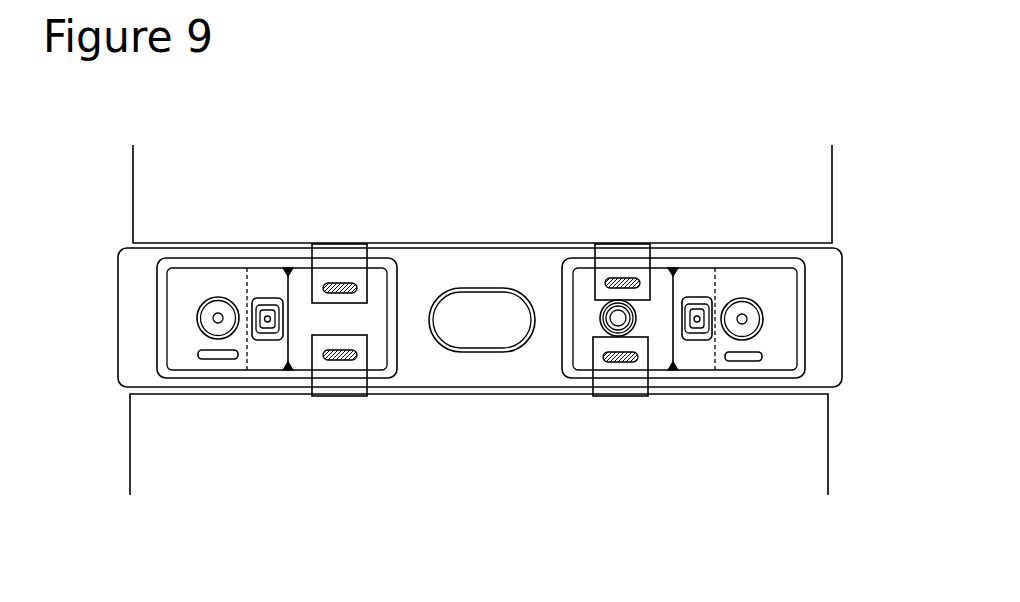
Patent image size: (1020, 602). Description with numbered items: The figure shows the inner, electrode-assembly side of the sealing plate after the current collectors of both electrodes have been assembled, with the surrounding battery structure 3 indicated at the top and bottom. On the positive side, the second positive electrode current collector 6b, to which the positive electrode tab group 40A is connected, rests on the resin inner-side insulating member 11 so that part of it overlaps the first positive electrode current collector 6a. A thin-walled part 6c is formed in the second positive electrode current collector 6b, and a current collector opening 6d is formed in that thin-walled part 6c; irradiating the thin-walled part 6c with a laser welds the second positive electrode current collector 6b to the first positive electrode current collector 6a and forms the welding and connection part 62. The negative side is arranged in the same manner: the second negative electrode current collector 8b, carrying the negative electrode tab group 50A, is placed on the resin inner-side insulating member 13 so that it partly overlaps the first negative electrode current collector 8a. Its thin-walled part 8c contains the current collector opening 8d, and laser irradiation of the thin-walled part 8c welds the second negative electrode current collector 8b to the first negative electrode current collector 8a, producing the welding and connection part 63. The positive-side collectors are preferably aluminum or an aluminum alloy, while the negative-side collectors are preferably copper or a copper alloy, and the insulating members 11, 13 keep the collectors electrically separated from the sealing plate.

The panel / wall 3 is at (803, 185).
The inner-side insulating member 11 is at (800, 357).
The inner-side insulating member 13 is at (158, 363).
The first negative electrode current collector 8a is at (203, 288).
The second negative electrode current collector 8b is at (368, 317).
The thin-walled part 8c is at (250, 345).
The current collector opening 8d is at (272, 297).
The welding and connection part 63 is at (267, 340).
The first positive electrode current collector 6a is at (767, 293).
The second positive electrode current collector 6b is at (585, 318).
The thin-walled part 6c is at (690, 340).
The current collector opening 6d is at (696, 297).
The welding and connection part 62 is at (702, 340).
The negative electrode tab group 50A is at (338, 267).
The positive electrode tab group 40A is at (618, 263).